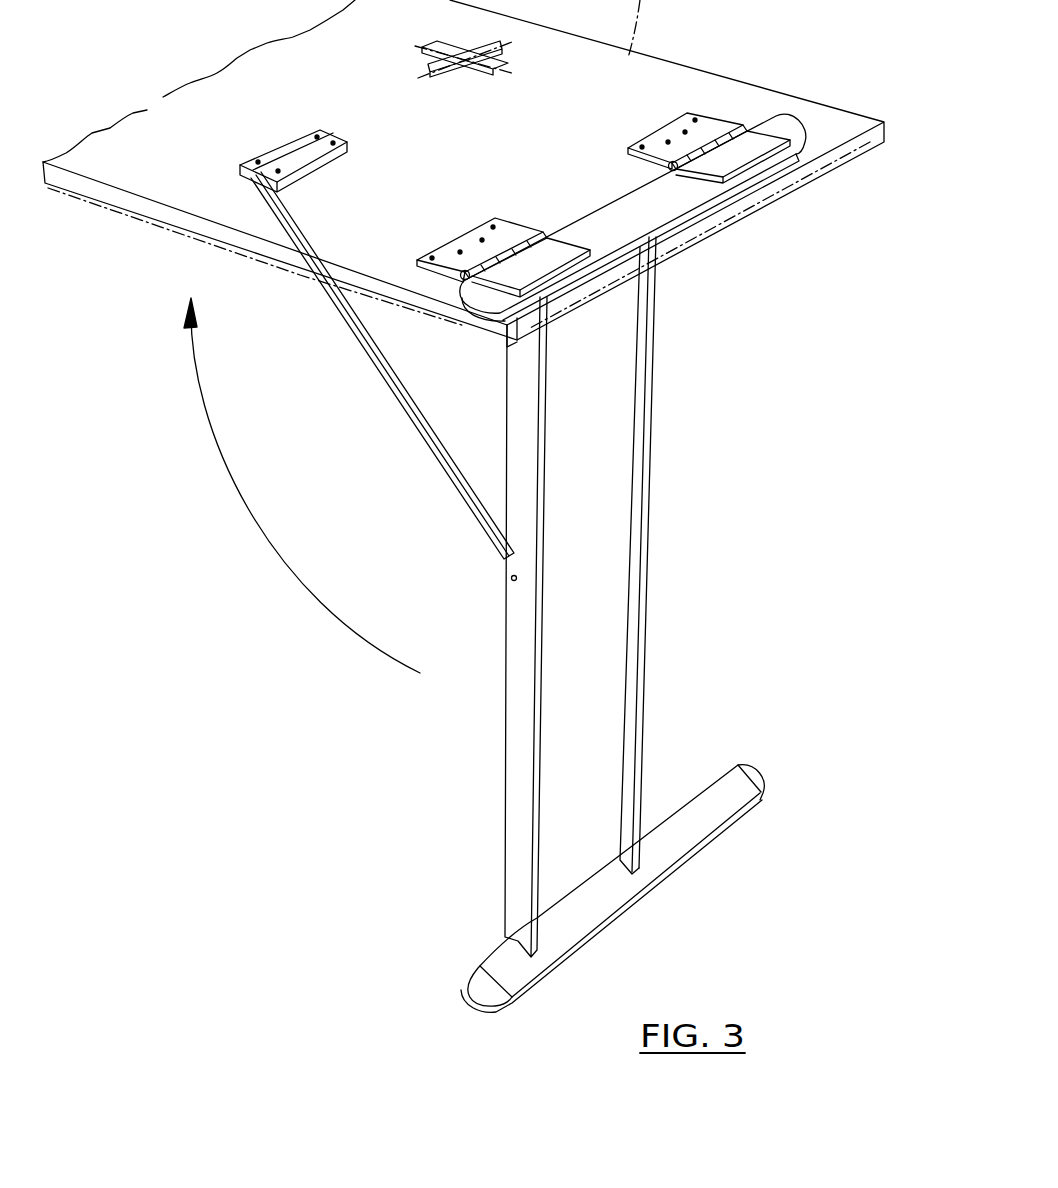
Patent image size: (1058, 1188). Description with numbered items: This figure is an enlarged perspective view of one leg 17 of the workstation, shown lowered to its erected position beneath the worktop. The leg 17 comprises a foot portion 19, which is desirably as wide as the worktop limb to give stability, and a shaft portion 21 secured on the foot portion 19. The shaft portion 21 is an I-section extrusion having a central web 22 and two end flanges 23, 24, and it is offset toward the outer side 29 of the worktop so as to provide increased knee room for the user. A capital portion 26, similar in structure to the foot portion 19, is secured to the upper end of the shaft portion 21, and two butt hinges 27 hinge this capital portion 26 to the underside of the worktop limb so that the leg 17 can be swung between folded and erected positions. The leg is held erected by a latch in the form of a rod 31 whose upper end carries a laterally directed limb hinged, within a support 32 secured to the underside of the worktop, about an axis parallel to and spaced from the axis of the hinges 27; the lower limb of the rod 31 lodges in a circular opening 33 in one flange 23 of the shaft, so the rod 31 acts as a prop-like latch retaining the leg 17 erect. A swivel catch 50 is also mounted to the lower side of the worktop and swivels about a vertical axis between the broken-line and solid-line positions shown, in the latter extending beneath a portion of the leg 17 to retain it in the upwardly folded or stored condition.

The leg 17 is at (683, 640).
The foot portion 19 is at (702, 810).
The shaft portion 21 is at (663, 555).
The central web 22 is at (607, 495).
The end flange 23 is at (530, 410).
The end flange 24 is at (648, 330).
The capital portion 26 is at (663, 203).
The butt hinge 27 is at (523, 220).
The outer side 29 is at (180, 226).
The rod 31 is at (427, 444).
The support 32 is at (292, 140).
The circular opening 33 is at (510, 579).
The swivel catch 50 is at (487, 40).